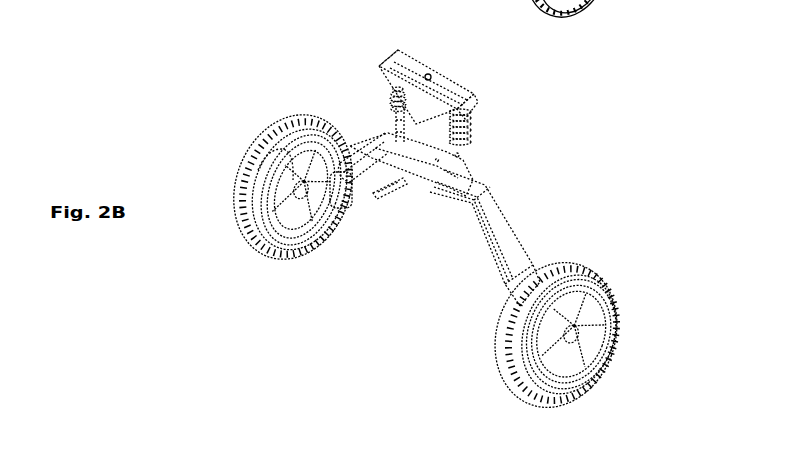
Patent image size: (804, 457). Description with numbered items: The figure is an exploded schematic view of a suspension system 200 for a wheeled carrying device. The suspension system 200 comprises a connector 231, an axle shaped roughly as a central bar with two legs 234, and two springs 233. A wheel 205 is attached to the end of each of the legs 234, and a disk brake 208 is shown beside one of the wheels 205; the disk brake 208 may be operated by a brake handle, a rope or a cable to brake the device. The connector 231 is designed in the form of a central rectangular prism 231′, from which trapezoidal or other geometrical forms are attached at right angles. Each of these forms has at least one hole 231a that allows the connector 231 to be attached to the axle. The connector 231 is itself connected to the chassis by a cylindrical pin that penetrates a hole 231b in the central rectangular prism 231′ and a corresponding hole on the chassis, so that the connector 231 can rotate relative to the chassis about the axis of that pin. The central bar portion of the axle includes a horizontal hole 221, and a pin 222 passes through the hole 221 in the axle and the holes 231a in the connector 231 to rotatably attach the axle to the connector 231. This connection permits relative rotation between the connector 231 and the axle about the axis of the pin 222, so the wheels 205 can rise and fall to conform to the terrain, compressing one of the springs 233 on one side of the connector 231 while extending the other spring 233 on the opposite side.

The suspension system 200 is at (292, 69).
The wheel 205 is at (306, 243).
The disk brake 208 is at (257, 168).
The horizontal hole 221 is at (463, 154).
The pin 222 is at (395, 193).
The connector 231 is at (451, 59).
The central rectangular prism 231′ is at (468, 91).
The hole 231a is at (420, 105).
The hole 231b is at (427, 73).
The spring 233 is at (392, 100).
The leg 234 is at (348, 200).